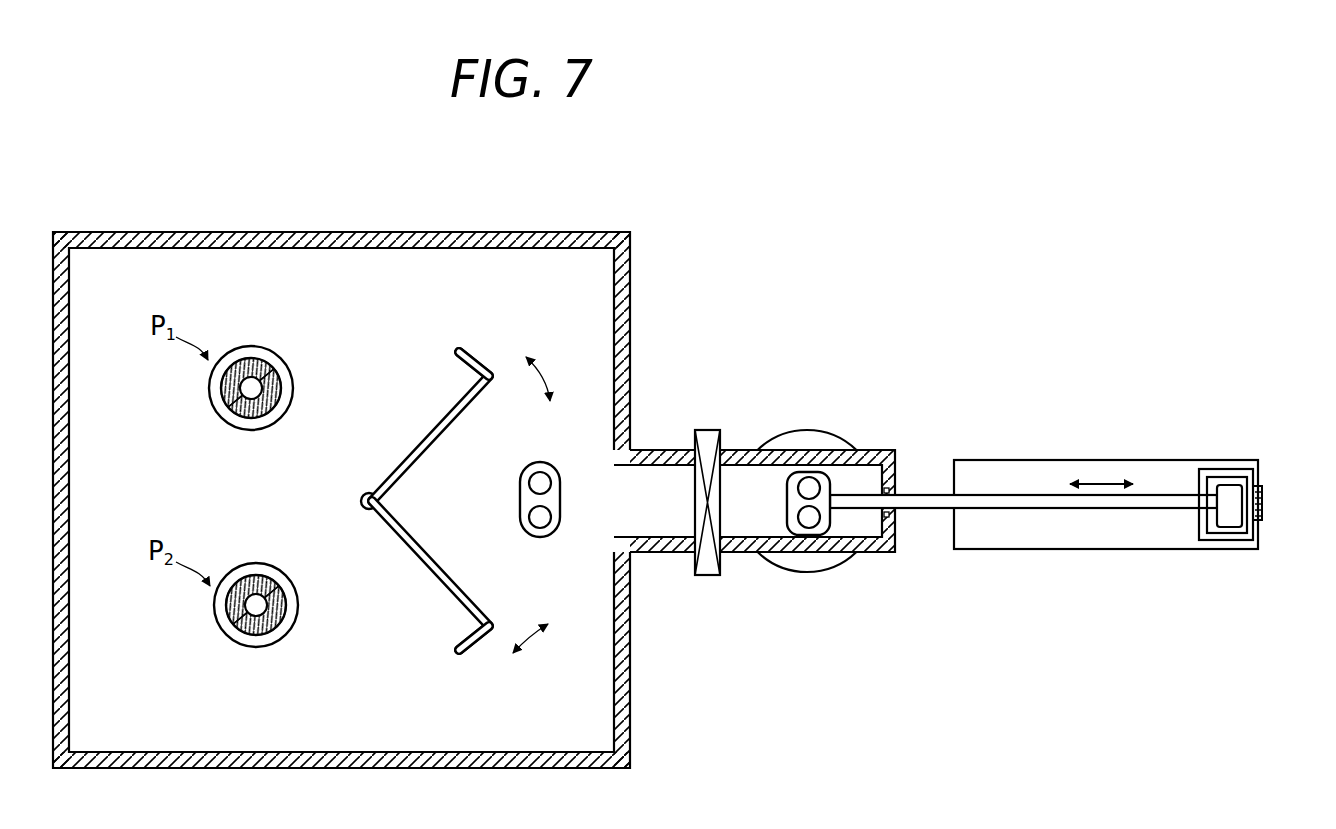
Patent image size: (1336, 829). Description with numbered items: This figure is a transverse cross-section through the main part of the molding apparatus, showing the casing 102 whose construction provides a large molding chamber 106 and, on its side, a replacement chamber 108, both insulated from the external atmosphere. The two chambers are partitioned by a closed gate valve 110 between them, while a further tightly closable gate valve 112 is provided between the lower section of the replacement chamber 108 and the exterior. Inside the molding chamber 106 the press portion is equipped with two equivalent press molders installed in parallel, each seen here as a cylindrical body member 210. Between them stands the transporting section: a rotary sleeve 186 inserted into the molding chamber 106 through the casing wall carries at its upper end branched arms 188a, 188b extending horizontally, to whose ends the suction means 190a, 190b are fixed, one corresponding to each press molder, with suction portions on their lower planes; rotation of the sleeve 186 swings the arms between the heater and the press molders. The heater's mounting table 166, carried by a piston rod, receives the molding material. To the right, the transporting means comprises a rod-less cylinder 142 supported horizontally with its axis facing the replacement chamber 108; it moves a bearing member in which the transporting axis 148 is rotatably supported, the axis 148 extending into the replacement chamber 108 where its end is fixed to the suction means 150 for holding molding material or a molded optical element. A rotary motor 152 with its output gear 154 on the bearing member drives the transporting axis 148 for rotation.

The casing 102 is at (633, 265).
The molding chamber 106 is at (456, 268).
The replacement chamber 108 is at (765, 482).
The gate valve 110 is at (705, 428).
The gate valve 112 is at (831, 567).
The rod-less cylinder 142 is at (1150, 540).
The transporting axis 148 is at (1040, 494).
The suction means 150 is at (812, 472).
The rotary motor 152 is at (1230, 486).
The output gear 154 is at (1263, 507).
The mounting table 166 is at (558, 533).
The rotary sleeve 186 is at (362, 506).
The branched arm 188a is at (438, 412).
The branched arm 188b is at (446, 600).
The suction means 190a is at (452, 352).
The suction means 190b is at (466, 658).
The cylindrical body member 210 is at (252, 375).